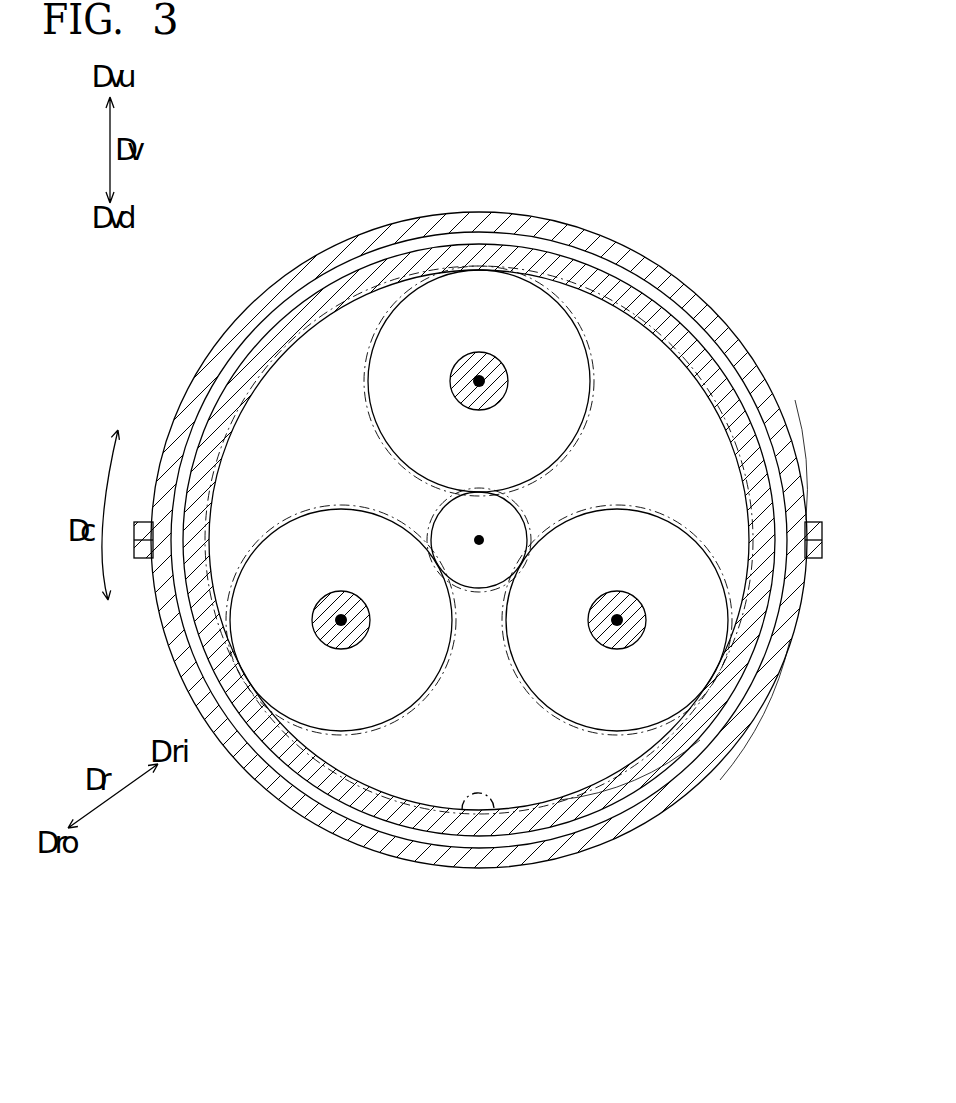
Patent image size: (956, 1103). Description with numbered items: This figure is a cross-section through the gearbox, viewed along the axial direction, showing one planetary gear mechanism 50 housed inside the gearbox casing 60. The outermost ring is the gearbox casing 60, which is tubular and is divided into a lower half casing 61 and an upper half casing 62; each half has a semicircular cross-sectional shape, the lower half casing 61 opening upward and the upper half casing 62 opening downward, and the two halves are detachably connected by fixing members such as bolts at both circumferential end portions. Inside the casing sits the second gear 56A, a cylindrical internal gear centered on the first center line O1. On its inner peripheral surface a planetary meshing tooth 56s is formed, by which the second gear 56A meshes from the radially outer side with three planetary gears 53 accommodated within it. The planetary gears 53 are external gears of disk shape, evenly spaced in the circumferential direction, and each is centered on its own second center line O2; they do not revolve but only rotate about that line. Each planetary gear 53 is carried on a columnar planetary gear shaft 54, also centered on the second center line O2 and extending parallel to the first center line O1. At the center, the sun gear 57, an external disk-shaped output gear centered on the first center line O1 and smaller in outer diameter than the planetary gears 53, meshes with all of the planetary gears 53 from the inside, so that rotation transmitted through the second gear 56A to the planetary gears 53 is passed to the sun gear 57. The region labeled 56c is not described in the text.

The planetary gear mechanism 50 is at (462, 228).
The planetary gear 53 is at (550, 318).
The planetary gear shaft 54 is at (460, 378).
The second gear 56A is at (712, 337).
The ring gear body portion 56c is at (624, 787).
The planetary meshing tooth 56s is at (494, 808).
The sun gear 57 is at (478, 588).
The gearbox casing 60 is at (786, 386).
The lower half casing 61 is at (743, 715).
The upper half casing 62 is at (796, 472).
The first center line O1 is at (481, 537).
The second center line O2 is at (477, 380).